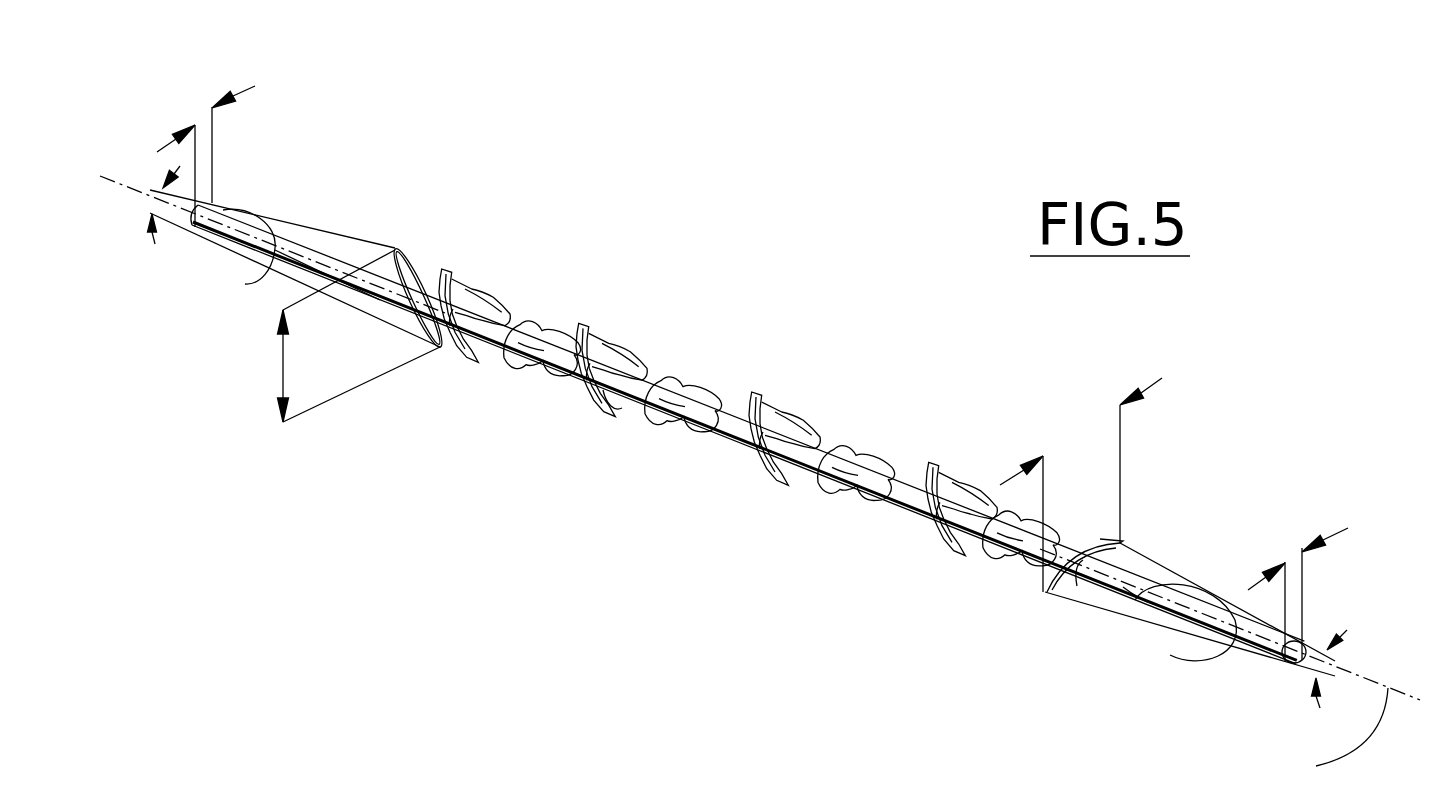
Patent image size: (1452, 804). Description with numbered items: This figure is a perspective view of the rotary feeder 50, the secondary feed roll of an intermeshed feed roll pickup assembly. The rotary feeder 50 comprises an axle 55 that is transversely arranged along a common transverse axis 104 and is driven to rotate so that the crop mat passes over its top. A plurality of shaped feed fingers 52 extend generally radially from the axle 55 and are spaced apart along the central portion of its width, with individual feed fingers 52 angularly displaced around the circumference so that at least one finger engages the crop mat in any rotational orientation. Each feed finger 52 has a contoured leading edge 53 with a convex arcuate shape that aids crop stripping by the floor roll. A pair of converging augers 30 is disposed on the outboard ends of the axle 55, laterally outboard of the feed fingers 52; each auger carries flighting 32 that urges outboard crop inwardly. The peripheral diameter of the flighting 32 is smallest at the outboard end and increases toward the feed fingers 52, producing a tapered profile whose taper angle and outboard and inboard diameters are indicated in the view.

The converging auger 30 is at (221, 306).
The flighting 32 is at (395, 250).
The rotary feeder 50 is at (671, 221).
The feed finger 52 is at (618, 352).
The contoured leading edge 53 is at (586, 330).
The axle 55 is at (613, 398).
The common transverse axis 104 is at (1330, 731).